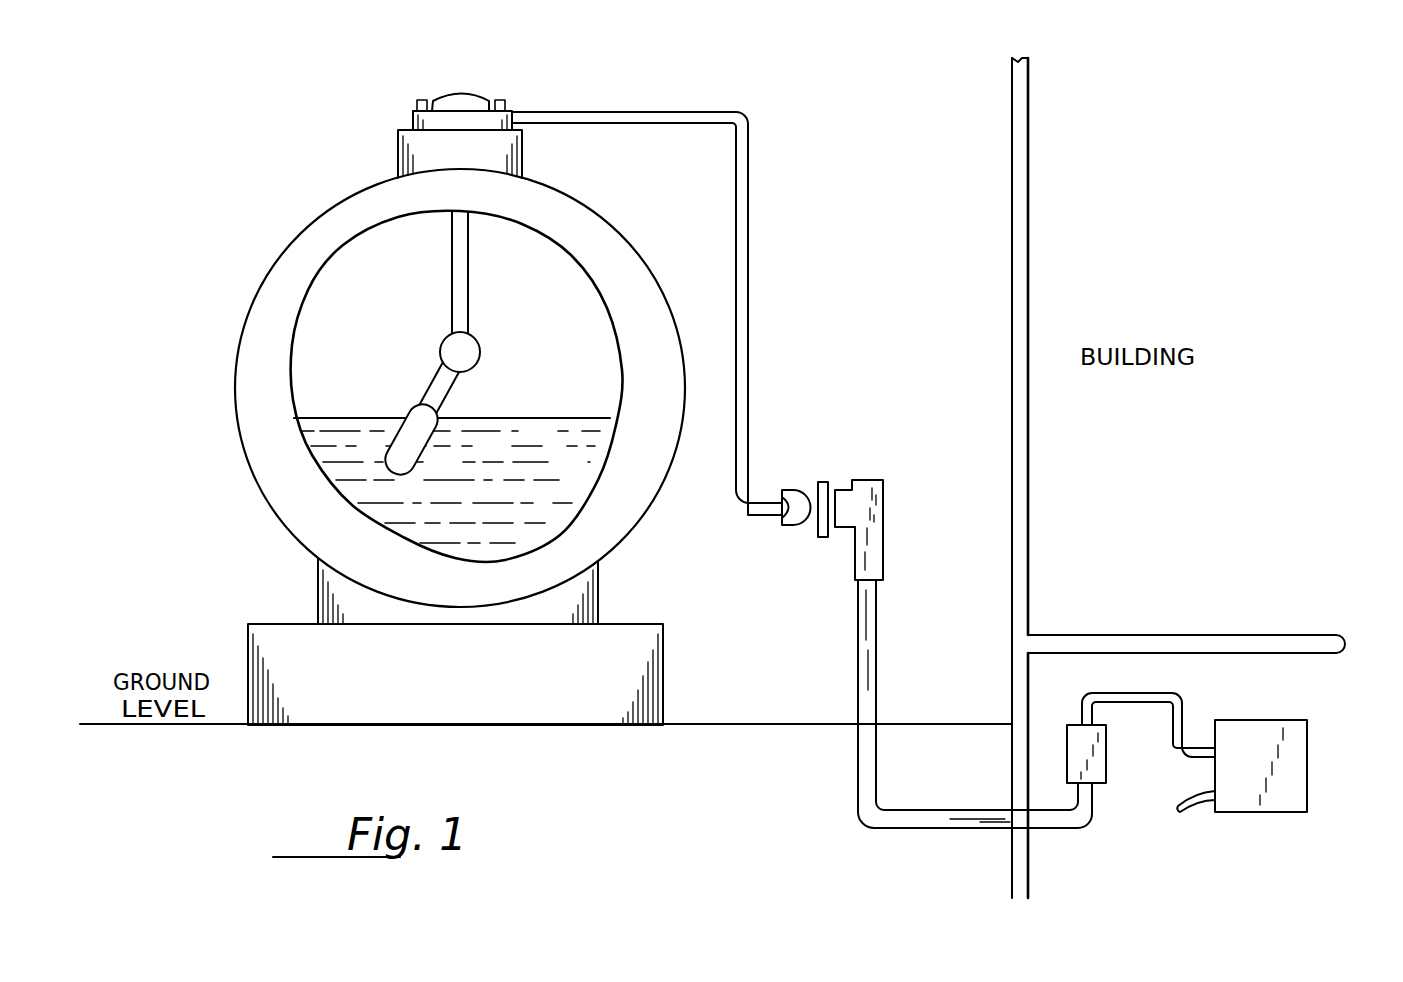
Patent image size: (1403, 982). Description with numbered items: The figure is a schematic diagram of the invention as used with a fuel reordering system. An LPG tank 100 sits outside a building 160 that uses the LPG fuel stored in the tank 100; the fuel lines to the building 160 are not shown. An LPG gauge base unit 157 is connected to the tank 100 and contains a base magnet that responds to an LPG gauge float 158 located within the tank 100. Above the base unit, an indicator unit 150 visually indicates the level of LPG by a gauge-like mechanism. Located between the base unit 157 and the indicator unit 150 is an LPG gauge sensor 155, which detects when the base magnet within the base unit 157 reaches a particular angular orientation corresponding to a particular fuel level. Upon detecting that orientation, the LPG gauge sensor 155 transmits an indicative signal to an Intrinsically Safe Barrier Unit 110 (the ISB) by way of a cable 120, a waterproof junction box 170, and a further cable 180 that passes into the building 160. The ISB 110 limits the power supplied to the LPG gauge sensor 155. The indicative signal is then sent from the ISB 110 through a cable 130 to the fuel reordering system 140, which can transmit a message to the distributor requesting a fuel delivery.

The LPG tank 100 is at (247, 312).
The Intrinsically Safe Barrier Unit 110 is at (1106, 763).
The cable 120 is at (748, 212).
The cable 130 is at (1112, 694).
The fuel reordering system 140 is at (1307, 756).
The indicator unit 150 is at (470, 92).
The LPG gauge sensor 155 is at (413, 118).
The LPG gauge base unit 157 is at (398, 162).
The LPG gauge float 158 is at (408, 412).
The building 160 is at (1028, 246).
The waterproof junction box 170 is at (883, 508).
The cable 180 is at (876, 676).